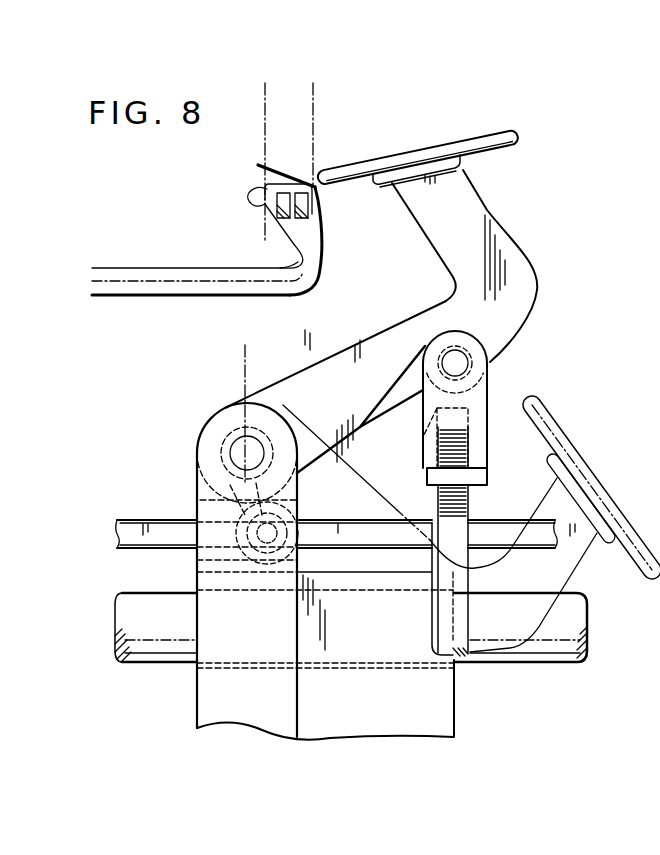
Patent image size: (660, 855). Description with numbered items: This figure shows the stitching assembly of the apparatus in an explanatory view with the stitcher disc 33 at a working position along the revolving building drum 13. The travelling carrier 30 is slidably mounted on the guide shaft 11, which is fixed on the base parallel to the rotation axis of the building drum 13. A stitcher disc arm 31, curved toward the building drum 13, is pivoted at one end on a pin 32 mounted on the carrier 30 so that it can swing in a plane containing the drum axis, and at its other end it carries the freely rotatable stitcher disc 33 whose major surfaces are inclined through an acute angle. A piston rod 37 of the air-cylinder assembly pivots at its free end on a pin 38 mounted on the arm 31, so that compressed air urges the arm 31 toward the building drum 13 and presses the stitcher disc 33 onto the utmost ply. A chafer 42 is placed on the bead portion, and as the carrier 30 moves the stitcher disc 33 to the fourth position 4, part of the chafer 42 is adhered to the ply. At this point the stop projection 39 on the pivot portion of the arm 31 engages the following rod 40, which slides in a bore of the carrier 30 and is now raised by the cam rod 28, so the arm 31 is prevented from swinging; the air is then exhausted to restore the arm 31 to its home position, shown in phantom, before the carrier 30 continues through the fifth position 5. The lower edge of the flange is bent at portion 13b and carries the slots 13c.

The fourth position 4 is at (279, 271).
The fifth position 5 is at (265, 148).
The guide shaft 11 is at (160, 665).
The revolving building drum 13 is at (193, 262).
The bent portion of flange 13b is at (291, 272).
The hook slots of flange 13c is at (262, 197).
The cam rod 28 is at (158, 542).
The travelling carrier 30 is at (238, 717).
The stitcher disc arm 31 is at (489, 209).
The pin 32 is at (228, 446).
The stitcher disc 33 is at (420, 155).
The piston rod 37 is at (470, 503).
The pin 38 is at (458, 363).
The stop projection 39 is at (200, 495).
The following rod 40 is at (299, 505).
The chafer 42 is at (288, 166).